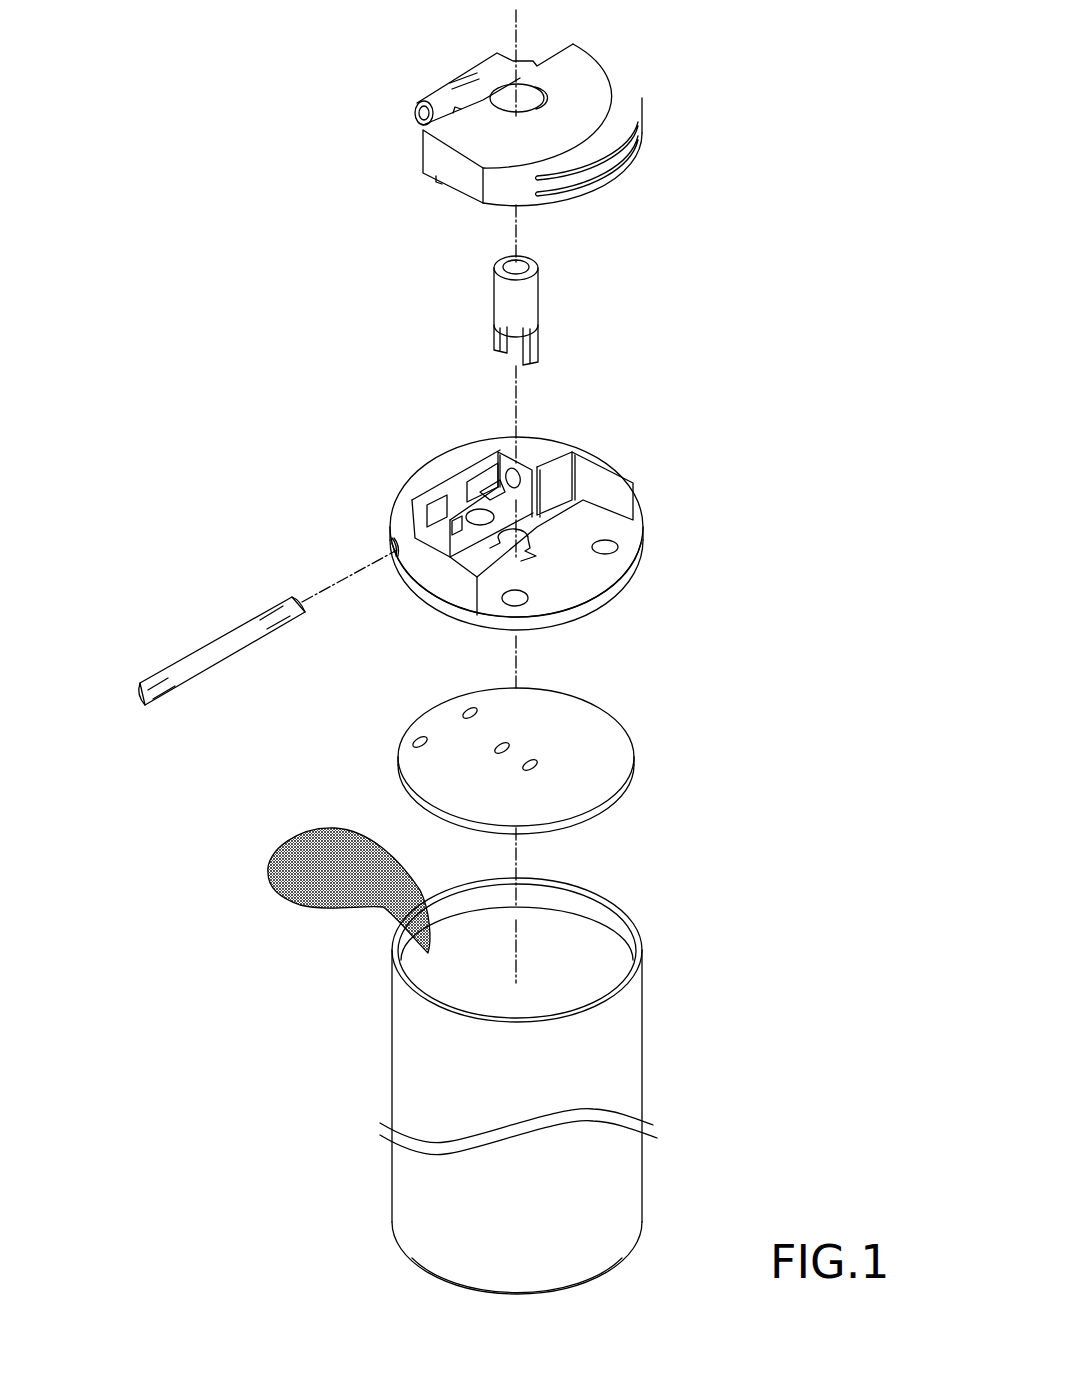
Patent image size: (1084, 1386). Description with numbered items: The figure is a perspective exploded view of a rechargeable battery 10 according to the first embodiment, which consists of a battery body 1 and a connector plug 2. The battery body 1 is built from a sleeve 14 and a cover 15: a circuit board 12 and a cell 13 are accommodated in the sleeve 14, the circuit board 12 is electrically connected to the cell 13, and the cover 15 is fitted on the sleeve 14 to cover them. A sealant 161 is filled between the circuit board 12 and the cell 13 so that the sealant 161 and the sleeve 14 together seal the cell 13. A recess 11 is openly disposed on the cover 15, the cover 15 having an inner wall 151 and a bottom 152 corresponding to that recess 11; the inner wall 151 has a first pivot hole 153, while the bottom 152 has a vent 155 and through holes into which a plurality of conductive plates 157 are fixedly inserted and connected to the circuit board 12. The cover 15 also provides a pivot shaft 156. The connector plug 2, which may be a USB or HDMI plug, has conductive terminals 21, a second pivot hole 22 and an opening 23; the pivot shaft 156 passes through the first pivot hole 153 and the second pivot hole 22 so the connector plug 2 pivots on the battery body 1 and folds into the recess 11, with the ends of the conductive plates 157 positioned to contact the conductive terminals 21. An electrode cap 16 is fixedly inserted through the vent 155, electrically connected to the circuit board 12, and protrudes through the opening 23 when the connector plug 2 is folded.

The battery body 1 is at (674, 1042).
The connector plug 2 is at (665, 106).
The rechargeable battery 10 is at (284, 88).
The recess 11 is at (605, 468).
The circuit board 12 is at (603, 747).
The cell 13 is at (580, 945).
The sleeve 14 is at (625, 1190).
The cover 15 is at (410, 482).
The electrode cap 16 is at (527, 300).
The conductive terminals 21 is at (567, 187).
The second pivot hole 22 is at (428, 113).
The opening 23 is at (503, 100).
The inner wall 151 is at (508, 462).
The bottom 152 is at (583, 575).
The first pivot hole 153 is at (528, 472).
The vent 155 is at (528, 553).
The pivot shaft 156 is at (222, 647).
The conductive plates 157 is at (466, 478).
The sealant 161 is at (320, 833).